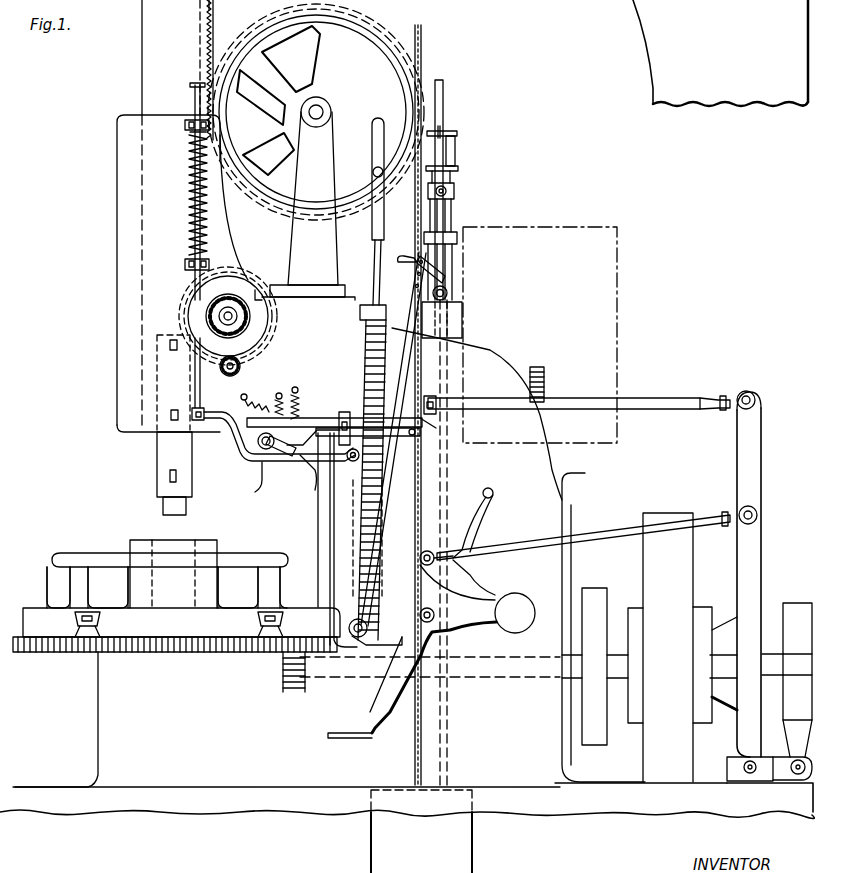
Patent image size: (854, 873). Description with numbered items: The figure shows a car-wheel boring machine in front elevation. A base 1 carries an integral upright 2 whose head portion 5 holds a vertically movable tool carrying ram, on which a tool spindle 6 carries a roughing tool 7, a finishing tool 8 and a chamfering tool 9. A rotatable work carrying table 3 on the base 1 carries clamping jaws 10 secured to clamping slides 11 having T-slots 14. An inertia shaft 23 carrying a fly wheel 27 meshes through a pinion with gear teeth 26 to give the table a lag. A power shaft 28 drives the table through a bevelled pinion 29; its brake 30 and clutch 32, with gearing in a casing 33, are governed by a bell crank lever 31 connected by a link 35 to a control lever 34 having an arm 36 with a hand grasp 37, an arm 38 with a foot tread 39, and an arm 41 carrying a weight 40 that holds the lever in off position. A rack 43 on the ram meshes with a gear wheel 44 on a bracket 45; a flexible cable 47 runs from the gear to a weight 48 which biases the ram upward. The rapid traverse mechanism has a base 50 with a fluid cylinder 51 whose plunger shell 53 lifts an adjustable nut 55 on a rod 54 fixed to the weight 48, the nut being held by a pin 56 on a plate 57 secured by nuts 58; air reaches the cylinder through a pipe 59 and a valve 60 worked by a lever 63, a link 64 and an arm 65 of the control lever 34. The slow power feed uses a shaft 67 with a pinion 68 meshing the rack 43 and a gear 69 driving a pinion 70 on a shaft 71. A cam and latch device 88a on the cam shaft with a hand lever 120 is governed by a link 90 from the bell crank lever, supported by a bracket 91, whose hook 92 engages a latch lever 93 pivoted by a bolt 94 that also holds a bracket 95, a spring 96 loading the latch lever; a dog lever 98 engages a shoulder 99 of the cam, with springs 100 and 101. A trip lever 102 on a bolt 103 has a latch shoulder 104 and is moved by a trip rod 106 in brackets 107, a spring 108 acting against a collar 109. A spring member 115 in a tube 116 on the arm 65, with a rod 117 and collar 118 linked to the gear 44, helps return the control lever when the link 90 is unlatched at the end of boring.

The base 1 is at (228, 778).
The upright 2 is at (670, 70).
The work carrying table 3 is at (33, 613).
The head portion 5 is at (118, 201).
The tool spindle 6 is at (184, 460).
The roughing tool 7 is at (170, 477).
The finishing tool 8 is at (170, 422).
The chamfering tool 9 is at (166, 346).
The clamping jaws 10 is at (72, 570).
The clamping slide 11 is at (258, 617).
The T-slots 14 is at (78, 630).
The shaft 23 is at (328, 518).
The gear teeth 26 is at (80, 655).
The fly wheel 27 is at (278, 288).
The power shaft 28 is at (560, 690).
The bevelled pinion 29 is at (293, 693).
The brake 30 is at (788, 608).
The bell crank lever 31 is at (762, 543).
The clutch 32 is at (712, 635).
The casing 33 is at (688, 563).
The control lever 34 is at (455, 585).
The link 35 is at (593, 538).
The arm 36 is at (480, 528).
The hand grasp 37 is at (494, 492).
The arm 38 is at (392, 718).
The foot tread 39 is at (340, 740).
The weight 40 is at (523, 603).
The arm 41 is at (478, 626).
The rack 43 is at (205, 14).
The gear wheel 44 is at (375, 63).
The bracket 45 is at (323, 140).
The flexible cable 47 is at (415, 226).
The weight 48 is at (473, 862).
The base 50 is at (460, 322).
The fluid cylinder 51 is at (455, 254).
The plunger shell 53 is at (451, 218).
The rod 54 is at (447, 760).
The adjustable nut 55 is at (459, 168).
The pin 56 is at (456, 150).
The plate 57 is at (457, 134).
The nuts 58 is at (450, 130).
The pipe 59 is at (444, 105).
The valve 60 is at (450, 276).
The lever 63 is at (404, 262).
The link 64 is at (410, 300).
The arm 65 is at (398, 642).
The shaft 67 is at (240, 316).
The pinion 68 is at (222, 285).
The gear 69 is at (250, 360).
The pinion 70 is at (240, 368).
The shaft 71 is at (200, 378).
The combined cam and latch device 88a is at (252, 442).
The link 90 is at (580, 408).
The bracket 91 is at (437, 403).
The hook 92 is at (436, 425).
The latch lever 93 is at (322, 418).
The bolt 94 is at (390, 444).
The bracket 95 is at (346, 412).
The spring 96 is at (275, 396).
The dog lever 98 is at (310, 468).
The shoulder 99 is at (272, 465).
The spring 100 is at (300, 396).
The spring 101 is at (250, 403).
The trip lever 102 is at (262, 452).
The bolt 103 is at (350, 461).
The latch shoulder 104 is at (268, 0).
The trip rod 106 is at (193, 100).
The brackets 107 is at (185, 127).
The spring 108 is at (192, 202).
The collar 109 is at (192, 134).
The spring member 115 is at (366, 352).
The tube 116 is at (363, 320).
The rod 117 is at (376, 250).
The collar 118 is at (358, 570).
The hand lever 120 is at (283, 455).